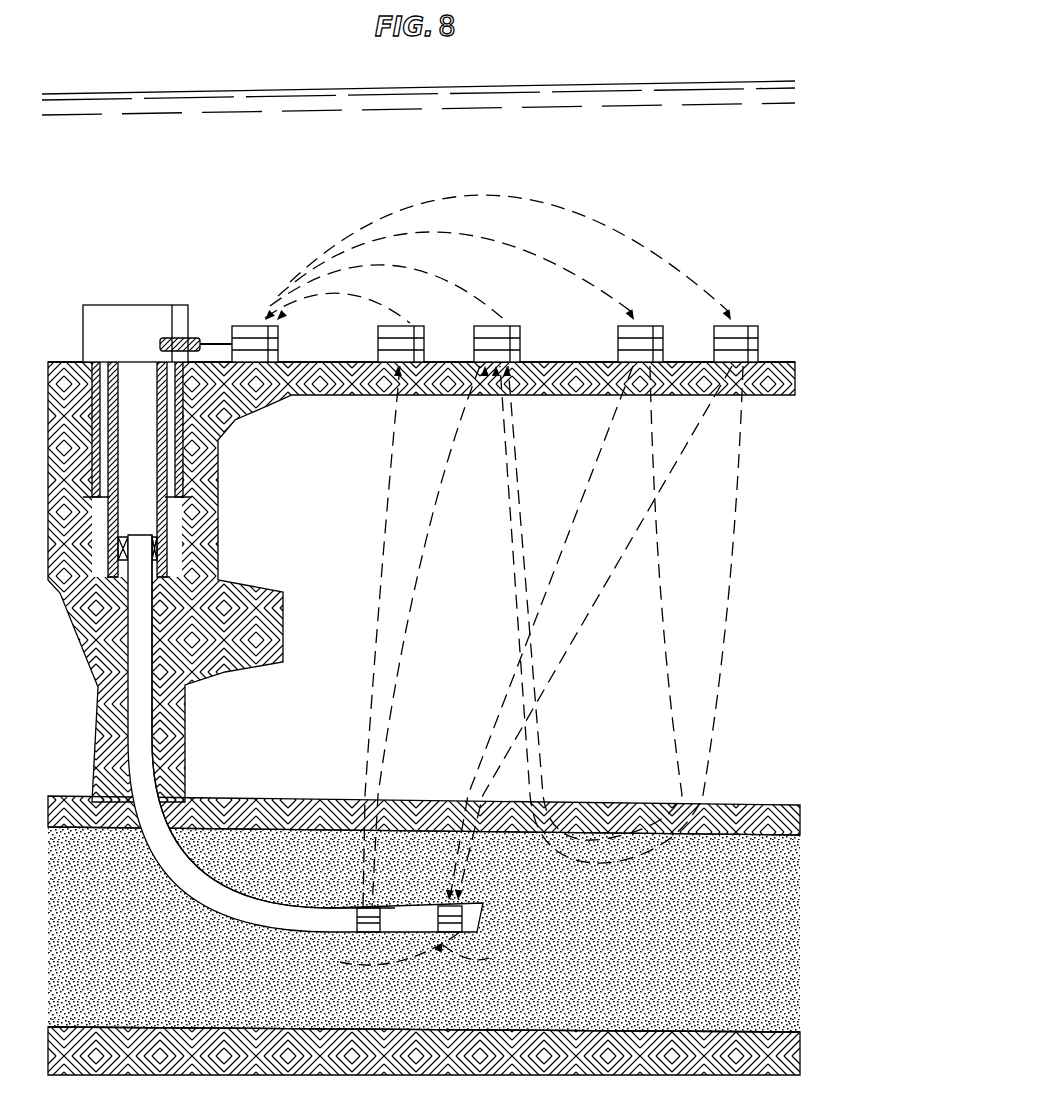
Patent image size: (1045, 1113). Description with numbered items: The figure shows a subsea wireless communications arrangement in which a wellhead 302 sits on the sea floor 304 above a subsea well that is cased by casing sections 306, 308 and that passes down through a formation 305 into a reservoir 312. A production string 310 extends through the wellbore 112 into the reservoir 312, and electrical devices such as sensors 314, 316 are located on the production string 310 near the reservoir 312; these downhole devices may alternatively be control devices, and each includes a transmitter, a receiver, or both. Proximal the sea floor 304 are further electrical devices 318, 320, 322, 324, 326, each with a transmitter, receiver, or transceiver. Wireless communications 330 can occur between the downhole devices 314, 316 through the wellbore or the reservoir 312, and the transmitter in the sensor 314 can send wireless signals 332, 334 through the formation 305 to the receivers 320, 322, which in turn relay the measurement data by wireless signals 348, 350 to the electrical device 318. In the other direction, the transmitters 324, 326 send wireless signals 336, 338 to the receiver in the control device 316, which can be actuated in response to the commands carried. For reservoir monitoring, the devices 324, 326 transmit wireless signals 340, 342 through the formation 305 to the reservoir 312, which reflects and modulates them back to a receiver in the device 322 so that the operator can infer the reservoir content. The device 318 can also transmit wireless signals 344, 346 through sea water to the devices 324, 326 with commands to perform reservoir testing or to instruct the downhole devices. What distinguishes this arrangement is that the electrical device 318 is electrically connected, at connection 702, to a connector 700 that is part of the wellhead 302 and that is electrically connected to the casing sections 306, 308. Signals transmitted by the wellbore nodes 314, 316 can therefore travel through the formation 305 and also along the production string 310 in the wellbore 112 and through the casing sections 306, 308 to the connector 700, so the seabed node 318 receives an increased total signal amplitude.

The wellbore 112 is at (155, 695).
The wellhead 302 is at (120, 305).
The sea floor 304 is at (562, 360).
The formation 305 is at (260, 644).
The casing section 306 is at (185, 463).
The casing section 308 is at (163, 439).
The production string 310 is at (147, 745).
The reservoir 312 is at (660, 944).
The sensor 314 is at (365, 933).
The sensor 316 is at (457, 933).
The electrical device 318 is at (235, 325).
The electrical device 320 is at (412, 322).
The electrical device 322 is at (507, 322).
The electrical device 324 is at (648, 318).
The electrical device 326 is at (745, 318).
The wireless communications 330 is at (415, 962).
The wireless signals 332 is at (383, 523).
The wireless signals 334 is at (422, 557).
The wireless signals 336 is at (503, 700).
The wireless signals 338 is at (510, 730).
The wireless signals 340 is at (675, 670).
The wireless signals 342 is at (717, 655).
The wireless signals 344 is at (552, 250).
The wireless signals 346 is at (608, 220).
The wireless signals 348 is at (308, 298).
The wireless signals 350 is at (338, 276).
The connector 700 is at (195, 335).
The electrical connection 702 is at (216, 340).